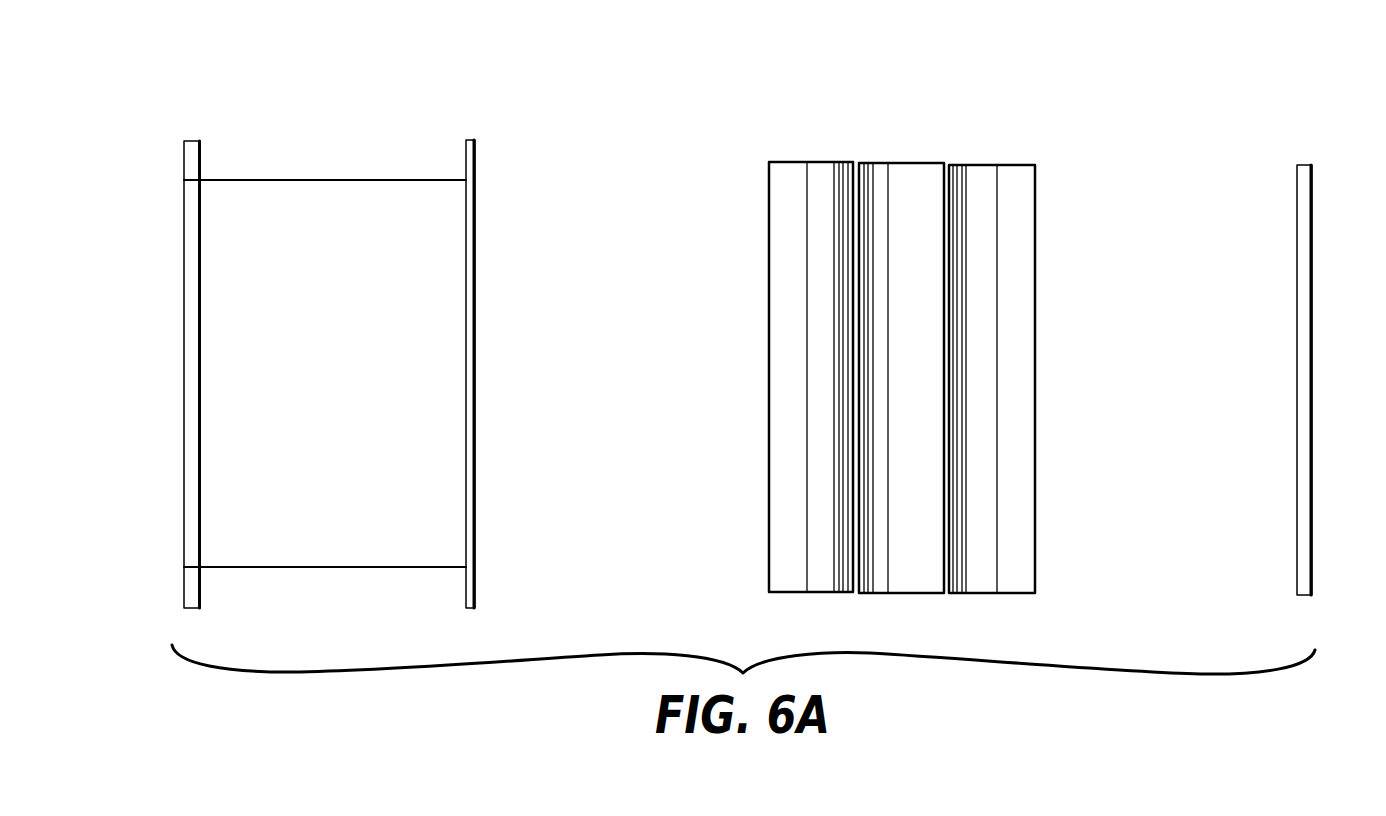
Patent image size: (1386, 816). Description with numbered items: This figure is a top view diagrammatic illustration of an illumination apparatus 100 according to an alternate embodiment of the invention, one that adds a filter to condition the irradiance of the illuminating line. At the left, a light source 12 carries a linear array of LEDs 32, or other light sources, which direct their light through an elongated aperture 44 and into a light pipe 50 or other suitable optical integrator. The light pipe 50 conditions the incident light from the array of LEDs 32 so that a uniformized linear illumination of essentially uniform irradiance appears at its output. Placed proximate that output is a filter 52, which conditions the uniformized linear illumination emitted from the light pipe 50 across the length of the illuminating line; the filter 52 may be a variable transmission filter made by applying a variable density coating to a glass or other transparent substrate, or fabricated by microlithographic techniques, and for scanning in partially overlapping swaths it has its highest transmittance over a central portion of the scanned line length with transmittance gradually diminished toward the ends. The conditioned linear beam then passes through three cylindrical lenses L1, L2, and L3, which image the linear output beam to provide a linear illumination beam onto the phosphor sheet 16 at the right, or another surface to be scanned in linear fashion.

The illumination apparatus 100 is at (1141, 84).
The light source 12 is at (169, 179).
The LEDs 32 is at (148, 213).
The light pipe 50 is at (397, 178).
The elongated aperture 44 is at (203, 557).
The filter 52 is at (477, 254).
The cylindrical lens L1 is at (826, 162).
The cylindrical lens L2 is at (902, 163).
The cylindrical lens L3 is at (975, 165).
The phosphor sheet 16 is at (1312, 347).